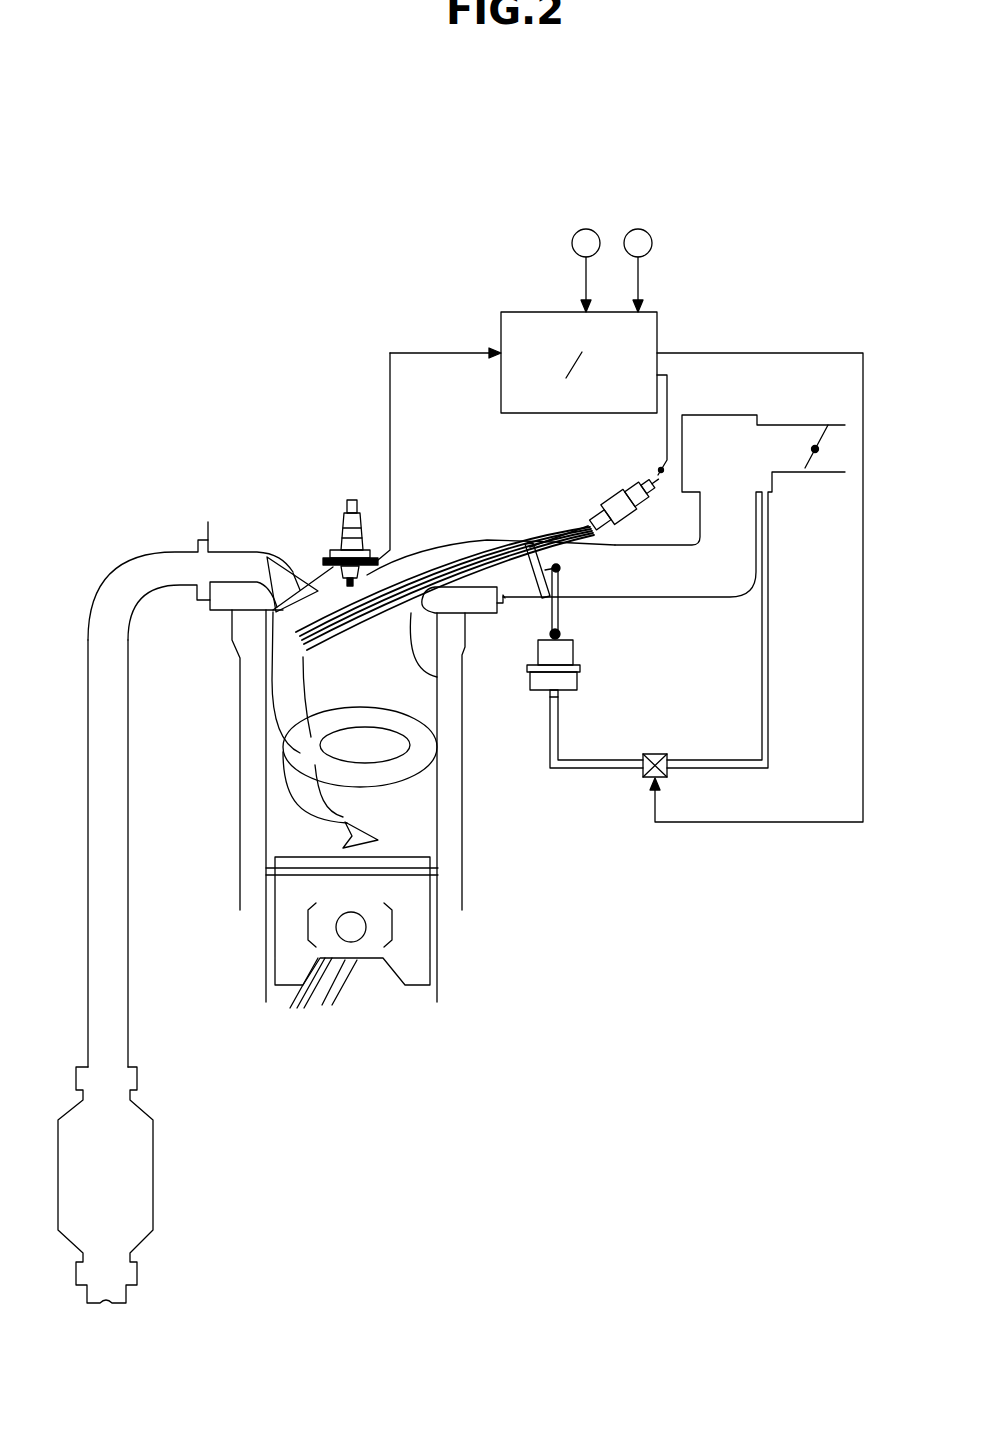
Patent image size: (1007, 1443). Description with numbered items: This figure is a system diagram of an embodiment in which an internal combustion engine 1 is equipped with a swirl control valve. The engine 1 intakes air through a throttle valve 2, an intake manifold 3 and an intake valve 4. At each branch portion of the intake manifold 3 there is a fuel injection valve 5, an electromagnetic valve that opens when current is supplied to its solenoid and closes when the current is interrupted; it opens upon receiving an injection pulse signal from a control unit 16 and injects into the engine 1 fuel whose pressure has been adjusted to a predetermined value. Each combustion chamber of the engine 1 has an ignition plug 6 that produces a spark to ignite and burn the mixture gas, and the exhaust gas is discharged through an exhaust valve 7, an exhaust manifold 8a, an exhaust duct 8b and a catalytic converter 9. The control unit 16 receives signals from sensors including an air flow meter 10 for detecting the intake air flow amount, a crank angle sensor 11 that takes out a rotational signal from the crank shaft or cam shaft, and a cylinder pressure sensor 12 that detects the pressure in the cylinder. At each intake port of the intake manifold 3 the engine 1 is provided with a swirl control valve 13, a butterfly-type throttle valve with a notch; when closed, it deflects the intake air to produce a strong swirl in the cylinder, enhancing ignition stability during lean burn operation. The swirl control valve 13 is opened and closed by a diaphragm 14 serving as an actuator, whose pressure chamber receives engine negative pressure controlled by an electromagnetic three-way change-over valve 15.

The internal combustion engine 1 is at (424, 530).
The throttle valve 2 is at (805, 471).
The intake manifold 3 is at (614, 592).
The intake valve 4 is at (425, 670).
The fuel injection valve 5 is at (622, 498).
The ignition plug 6 is at (348, 503).
The exhaust valve 7 is at (277, 633).
The exhaust manifold 8a is at (168, 565).
The exhaust duct 8b is at (128, 783).
The catalytic converter 9 is at (143, 1155).
The air flow meter 10 is at (590, 236).
The crank angle sensor 11 is at (646, 240).
The cylinder pressure sensor 12 is at (326, 550).
The swirl control valve 13 is at (533, 597).
The diaphragm 14 is at (580, 678).
The electromagnetic three-way change-over valve 15 is at (647, 780).
The control unit 16 is at (658, 333).